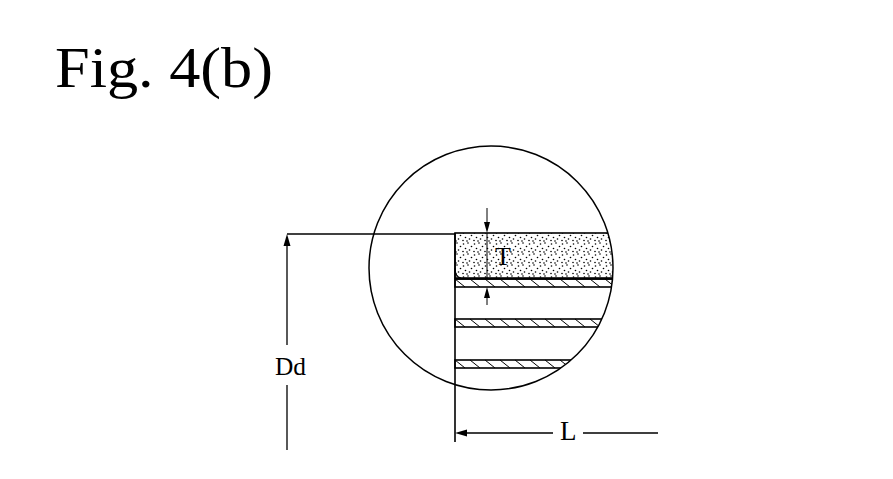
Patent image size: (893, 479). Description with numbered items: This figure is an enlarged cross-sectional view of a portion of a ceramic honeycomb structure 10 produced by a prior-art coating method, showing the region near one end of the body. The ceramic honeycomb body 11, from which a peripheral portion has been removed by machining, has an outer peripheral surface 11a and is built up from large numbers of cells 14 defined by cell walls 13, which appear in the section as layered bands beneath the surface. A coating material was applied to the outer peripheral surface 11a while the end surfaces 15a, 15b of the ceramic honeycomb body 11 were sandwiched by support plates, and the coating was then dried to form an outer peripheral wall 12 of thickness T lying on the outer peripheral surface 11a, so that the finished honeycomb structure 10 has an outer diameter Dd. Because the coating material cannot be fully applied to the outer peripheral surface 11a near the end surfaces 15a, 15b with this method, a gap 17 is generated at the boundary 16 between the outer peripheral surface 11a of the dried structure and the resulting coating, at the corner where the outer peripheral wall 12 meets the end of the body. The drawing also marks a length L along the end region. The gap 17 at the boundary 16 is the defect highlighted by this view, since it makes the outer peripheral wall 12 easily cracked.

The ceramic honeycomb structure 10 is at (676, 234).
The ceramic honeycomb body 11 is at (606, 332).
The outer peripheral surface 11a is at (612, 284).
The outer peripheral wall 12 is at (551, 253).
The cell walls 13 is at (600, 323).
The cells 14 is at (545, 346).
The end surface 15a is at (400, 337).
The end surface 15b is at (455, 342).
The boundary 16 is at (446, 279).
The gap 17 is at (457, 278).